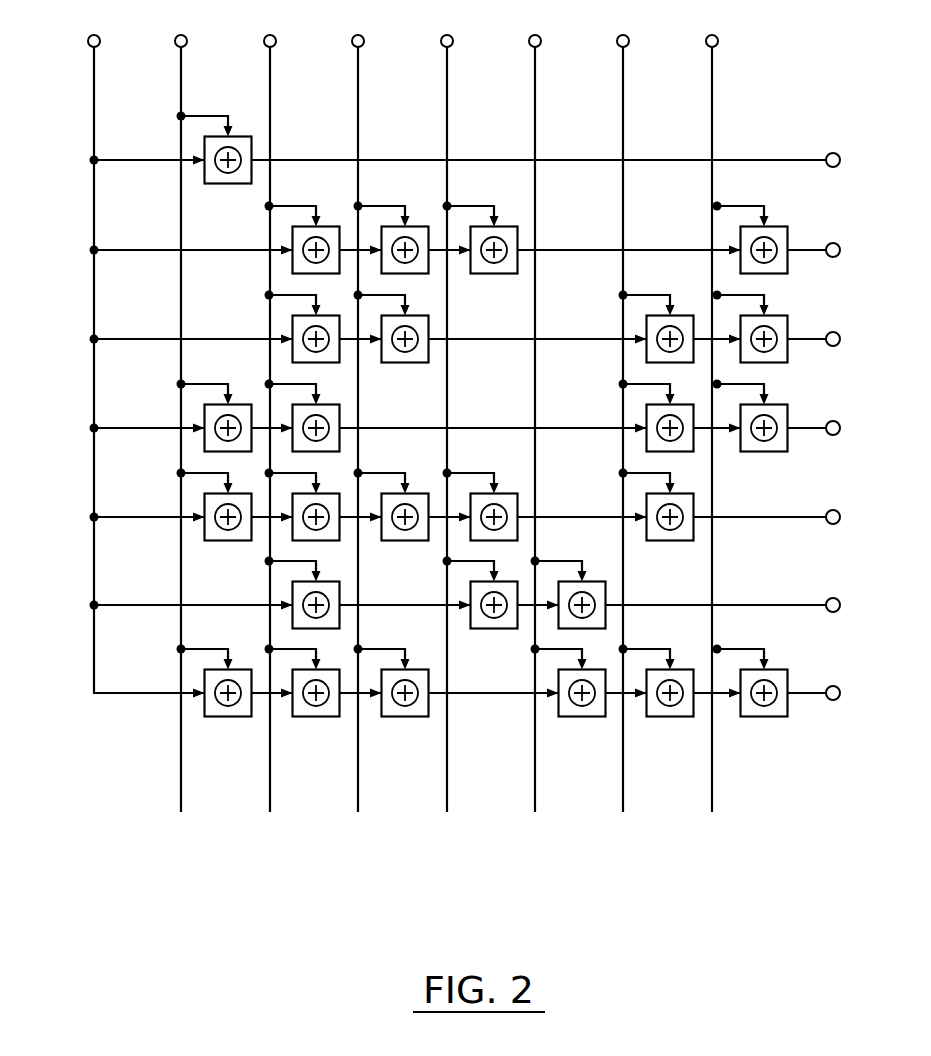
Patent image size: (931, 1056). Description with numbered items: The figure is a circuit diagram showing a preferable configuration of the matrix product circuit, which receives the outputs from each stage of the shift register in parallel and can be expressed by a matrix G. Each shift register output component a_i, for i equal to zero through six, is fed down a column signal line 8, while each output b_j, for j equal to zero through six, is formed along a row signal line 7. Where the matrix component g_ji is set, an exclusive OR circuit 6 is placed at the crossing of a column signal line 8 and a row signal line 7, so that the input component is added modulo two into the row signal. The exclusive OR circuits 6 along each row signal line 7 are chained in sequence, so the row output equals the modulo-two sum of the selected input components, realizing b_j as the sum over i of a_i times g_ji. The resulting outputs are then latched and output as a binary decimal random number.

The exclusive OR circuit 6 is at (237, 138).
The row signal line 7 is at (72, 121).
The column signal line 8 is at (753, 826).